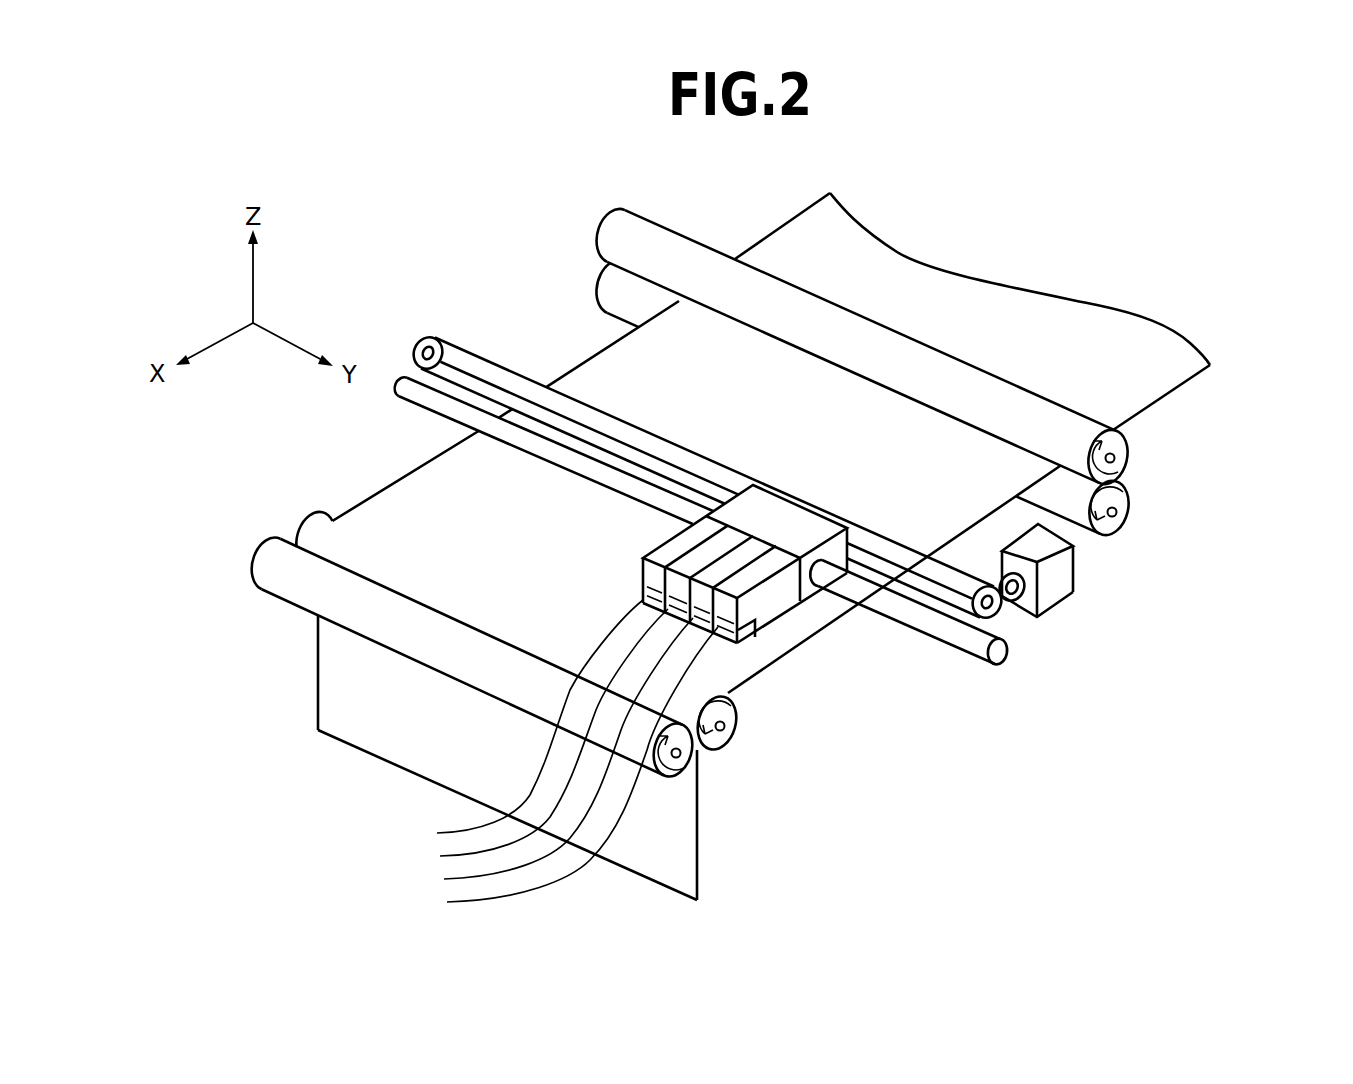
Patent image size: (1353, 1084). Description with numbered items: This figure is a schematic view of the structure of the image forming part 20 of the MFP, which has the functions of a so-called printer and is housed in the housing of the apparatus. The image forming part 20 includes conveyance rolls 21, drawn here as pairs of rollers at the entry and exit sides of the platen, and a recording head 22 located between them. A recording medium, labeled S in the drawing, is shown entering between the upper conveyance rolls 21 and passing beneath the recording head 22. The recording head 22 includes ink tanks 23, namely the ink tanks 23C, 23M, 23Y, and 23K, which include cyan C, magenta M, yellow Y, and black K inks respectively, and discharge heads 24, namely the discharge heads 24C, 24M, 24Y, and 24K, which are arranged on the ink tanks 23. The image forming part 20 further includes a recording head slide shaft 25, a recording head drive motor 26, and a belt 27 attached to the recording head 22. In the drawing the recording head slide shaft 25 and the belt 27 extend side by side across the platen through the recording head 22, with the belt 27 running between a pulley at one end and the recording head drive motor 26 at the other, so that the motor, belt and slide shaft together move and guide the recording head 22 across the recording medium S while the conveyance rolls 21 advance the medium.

The image forming part 20 is at (1181, 203).
The conveyance rolls 21 is at (1130, 466).
The recording head 22 is at (787, 532).
The ink tanks 23 is at (771, 656).
The ink tank 23C is at (737, 643).
The ink tank 23M is at (748, 640).
The ink tank 23Y is at (757, 620).
The ink tank 23K is at (783, 587).
The discharge heads 24 is at (530, 760).
The discharge head 24C is at (515, 722).
The discharge head 24M is at (528, 739).
The discharge head 24Y is at (540, 756).
The discharge head 24K is at (381, 817).
The recording head slide shaft 25 is at (930, 637).
The recording head drive motor 26 is at (1068, 604).
The belt 27 is at (448, 337).
The recording sheet S is at (830, 232).